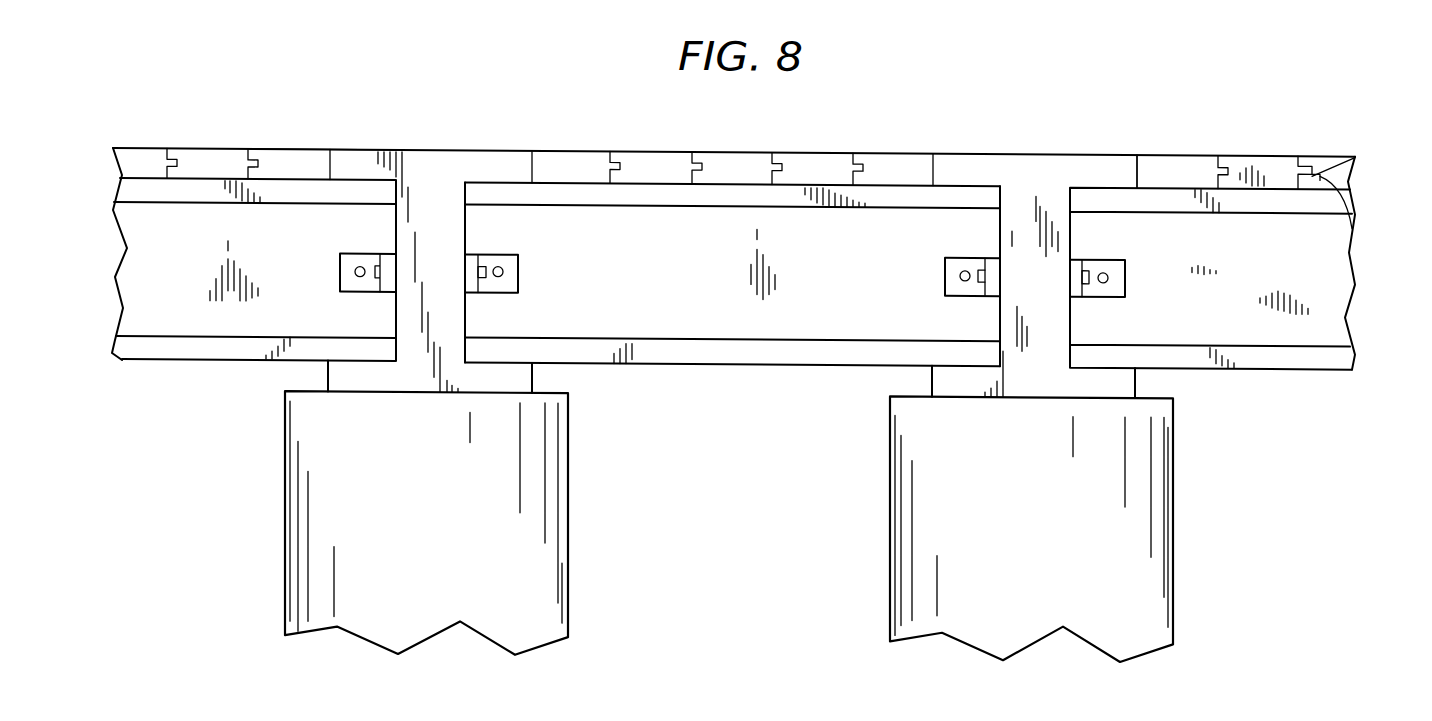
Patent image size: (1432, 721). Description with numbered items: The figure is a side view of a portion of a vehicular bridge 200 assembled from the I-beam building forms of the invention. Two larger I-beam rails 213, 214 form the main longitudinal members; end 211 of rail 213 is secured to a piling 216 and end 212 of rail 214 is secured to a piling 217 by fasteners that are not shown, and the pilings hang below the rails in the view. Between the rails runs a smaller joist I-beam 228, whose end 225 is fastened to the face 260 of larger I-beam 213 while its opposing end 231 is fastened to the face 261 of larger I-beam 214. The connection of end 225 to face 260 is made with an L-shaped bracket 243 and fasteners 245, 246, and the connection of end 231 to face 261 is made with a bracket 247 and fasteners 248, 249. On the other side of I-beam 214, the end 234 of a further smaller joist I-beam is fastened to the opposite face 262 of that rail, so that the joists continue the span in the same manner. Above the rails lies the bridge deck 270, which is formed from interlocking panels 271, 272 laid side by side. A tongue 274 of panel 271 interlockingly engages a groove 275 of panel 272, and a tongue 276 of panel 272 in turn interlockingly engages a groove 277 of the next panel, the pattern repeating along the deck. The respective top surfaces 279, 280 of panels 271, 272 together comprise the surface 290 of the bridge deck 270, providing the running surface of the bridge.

The vehicular bridge 200 is at (138, 265).
The end of I-beam rail 211 is at (430, 191).
The end of I-beam rail 212 is at (1032, 180).
The larger I-beam rail 213 is at (372, 158).
The larger I-beam rail 214 is at (990, 161).
The piling 216 is at (298, 576).
The piling 217 is at (902, 587).
The end of joist I-beam 225 is at (493, 215).
The smaller joist I-beam 228 is at (707, 321).
The opposing end of joist I-beam 231 is at (965, 322).
The end of joist I-beam 234 is at (1103, 318).
The L-shaped bracket 243 is at (508, 252).
The fastener 245 is at (484, 272).
The fastener 246 is at (504, 269).
The bracket 247 is at (960, 252).
The fastener 248 is at (961, 270).
The fastener 249 is at (985, 286).
The face of I-beam 260 is at (467, 322).
The face of I-beam 261 is at (990, 188).
The face of I-beam 262 is at (1072, 231).
The bridge deck 270 is at (134, 155).
The interlocking panel 271 is at (199, 155).
The interlocking panel 272 is at (1317, 157).
The tongue 274 is at (1230, 170).
The groove 275 is at (1222, 163).
The tongue 276 is at (1353, 219).
The groove 277 is at (1357, 154).
The top surface 279 is at (1197, 148).
The top surface 280 is at (1290, 157).
The surface of bridge deck 290 is at (291, 147).